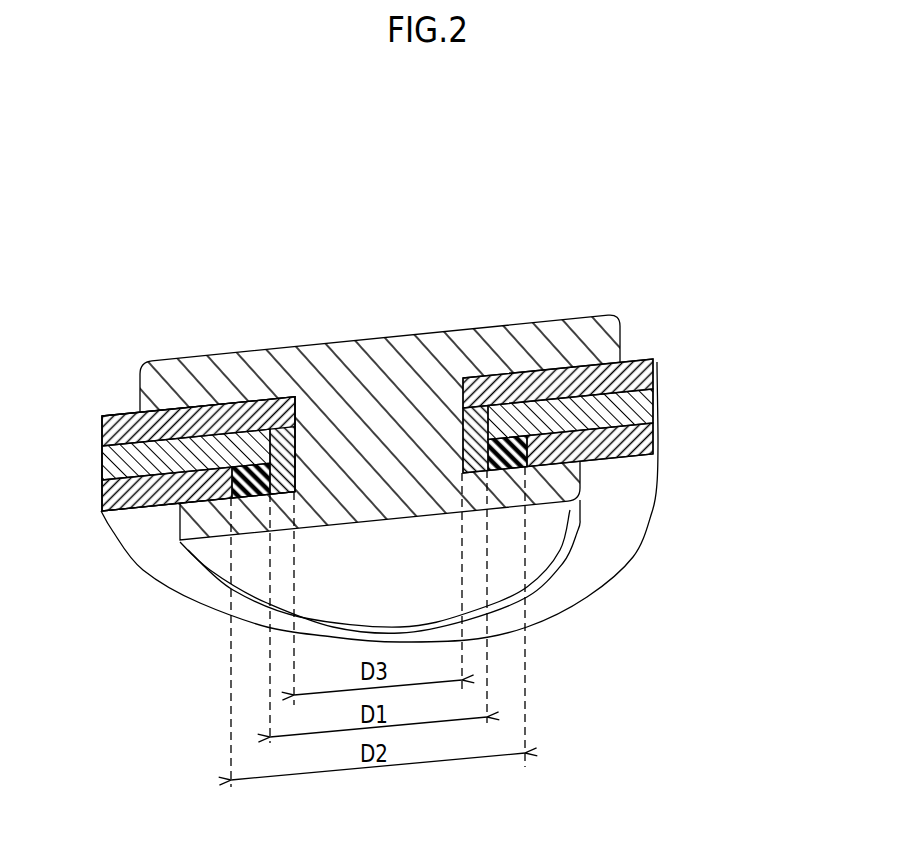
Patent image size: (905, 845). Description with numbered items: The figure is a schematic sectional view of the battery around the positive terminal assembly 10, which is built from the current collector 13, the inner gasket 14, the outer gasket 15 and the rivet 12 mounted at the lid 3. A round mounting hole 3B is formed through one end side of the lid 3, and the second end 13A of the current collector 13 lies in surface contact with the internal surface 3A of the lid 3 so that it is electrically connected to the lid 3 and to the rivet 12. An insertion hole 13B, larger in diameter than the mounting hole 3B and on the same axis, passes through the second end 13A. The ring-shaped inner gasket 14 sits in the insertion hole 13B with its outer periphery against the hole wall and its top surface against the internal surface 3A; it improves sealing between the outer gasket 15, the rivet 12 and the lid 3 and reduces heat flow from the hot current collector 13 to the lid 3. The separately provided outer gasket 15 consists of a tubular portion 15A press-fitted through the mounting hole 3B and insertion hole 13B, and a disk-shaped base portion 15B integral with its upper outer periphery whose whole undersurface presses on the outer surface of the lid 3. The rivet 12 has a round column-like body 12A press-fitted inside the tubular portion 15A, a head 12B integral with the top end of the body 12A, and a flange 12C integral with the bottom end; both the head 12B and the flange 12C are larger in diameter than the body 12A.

The positive terminal assembly 10 is at (380, 174).
The rivet 12 is at (380, 242).
The body 12A is at (305, 437).
The head 12B is at (262, 400).
The flange 12C is at (288, 511).
The current collector 13 is at (120, 528).
The second end 13A is at (180, 515).
The insertion hole 13B is at (236, 492).
The inner gasket 14 is at (507, 468).
The outer gasket 15 is at (573, 233).
The tubular portion 15A is at (465, 418).
The base portion 15B is at (537, 380).
The lid 3 is at (120, 462).
The internal surface 3A is at (120, 500).
The mounting hole 3B is at (267, 362).